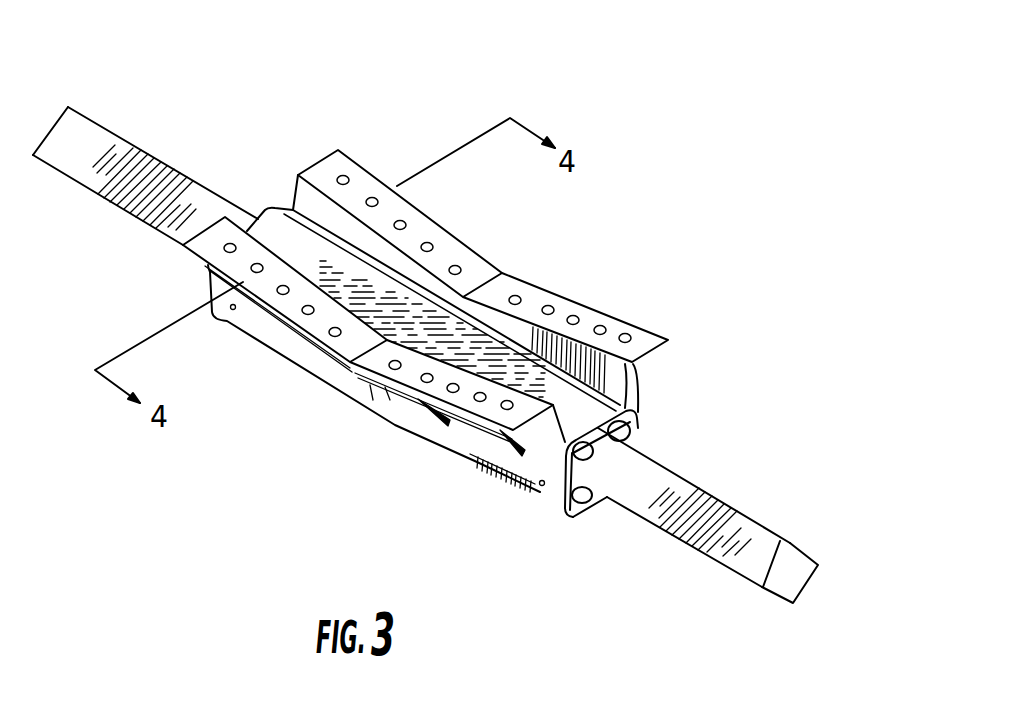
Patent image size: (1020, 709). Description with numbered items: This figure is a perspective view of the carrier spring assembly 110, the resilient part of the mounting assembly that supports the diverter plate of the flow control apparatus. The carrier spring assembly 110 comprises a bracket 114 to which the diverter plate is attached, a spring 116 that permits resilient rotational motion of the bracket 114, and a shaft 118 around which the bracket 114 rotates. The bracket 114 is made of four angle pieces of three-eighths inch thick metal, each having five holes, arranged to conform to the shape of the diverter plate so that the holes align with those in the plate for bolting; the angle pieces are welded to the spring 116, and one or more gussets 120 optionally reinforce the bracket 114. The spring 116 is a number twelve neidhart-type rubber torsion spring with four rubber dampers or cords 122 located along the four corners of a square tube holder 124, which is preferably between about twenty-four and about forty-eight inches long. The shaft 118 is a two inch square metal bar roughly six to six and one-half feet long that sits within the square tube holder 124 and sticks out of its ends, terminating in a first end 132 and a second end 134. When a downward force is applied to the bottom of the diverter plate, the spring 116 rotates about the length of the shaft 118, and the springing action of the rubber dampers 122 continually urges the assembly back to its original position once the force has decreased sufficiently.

The carrier spring assembly 110 is at (440, 203).
The bracket 114 is at (322, 158).
The spring 116 is at (266, 205).
The shaft 118 is at (100, 123).
The gusset 120 is at (420, 401).
The rubber dampers 122 is at (640, 442).
The square tube holder 124 is at (598, 505).
The first end 132 is at (80, 127).
The second end 134 is at (760, 558).